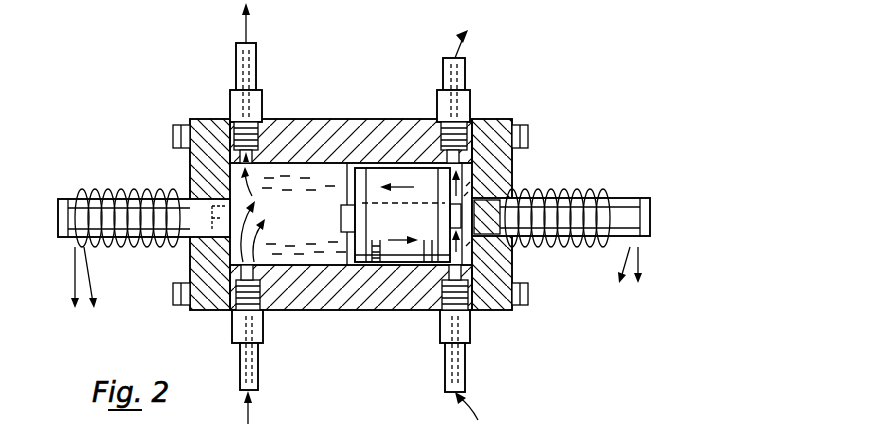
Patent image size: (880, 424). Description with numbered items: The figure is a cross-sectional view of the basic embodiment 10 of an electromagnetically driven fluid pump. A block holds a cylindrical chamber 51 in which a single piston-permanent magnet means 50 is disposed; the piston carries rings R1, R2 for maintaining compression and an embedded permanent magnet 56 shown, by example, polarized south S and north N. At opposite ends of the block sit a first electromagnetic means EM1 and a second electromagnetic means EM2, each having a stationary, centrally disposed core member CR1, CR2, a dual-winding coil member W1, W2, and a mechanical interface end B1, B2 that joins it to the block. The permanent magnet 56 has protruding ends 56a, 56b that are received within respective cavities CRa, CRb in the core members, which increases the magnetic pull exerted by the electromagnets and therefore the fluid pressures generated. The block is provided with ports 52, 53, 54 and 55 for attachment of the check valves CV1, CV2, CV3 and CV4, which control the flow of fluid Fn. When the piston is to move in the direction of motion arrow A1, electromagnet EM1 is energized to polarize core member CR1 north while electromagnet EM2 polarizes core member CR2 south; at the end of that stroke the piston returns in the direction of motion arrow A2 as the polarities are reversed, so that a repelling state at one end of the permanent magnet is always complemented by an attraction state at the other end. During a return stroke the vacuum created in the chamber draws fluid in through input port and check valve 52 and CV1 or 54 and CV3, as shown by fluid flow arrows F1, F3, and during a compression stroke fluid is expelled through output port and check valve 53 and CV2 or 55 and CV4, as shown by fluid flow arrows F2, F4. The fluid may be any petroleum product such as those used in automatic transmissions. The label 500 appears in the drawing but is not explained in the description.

The basic embodiment 10 is at (396, 177).
The piston-permanent magnet means 50 is at (360, 266).
The cylindrical chamber 51 is at (305, 160).
The port 52 is at (233, 308).
The port 53 is at (238, 117).
The port 54 is at (448, 346).
The port 55 is at (446, 118).
The embedded permanent magnet 56 is at (442, 257).
The protruding end 56a is at (316, 216).
The protruding end 56b is at (508, 260).
The mechanical interface end B1 is at (272, 168).
The mechanical interface end B2 is at (490, 200).
The check-valved fluid input port CV1 is at (256, 327).
The output port check valve CV2 is at (259, 103).
The check-valved fluid input port CV3 is at (484, 328).
The output port check valve CV4 is at (470, 105).
The core member CR1 is at (144, 250).
The core member CR2 is at (596, 170).
The cavity CRa is at (200, 262).
The cavity CRb is at (505, 160).
The first electromagnetic means EM1 is at (85, 180).
The second electromagnetic means EM2 is at (660, 186).
The dual-winding coil member W1 is at (96, 298).
The dual-winding coil member W2 is at (640, 262).
The input fluid flow F1 is at (251, 410).
The fluid output flow F2 is at (250, 28).
The input fluid flow F3 is at (478, 420).
The fluid output flow F4 is at (462, 37).
The ring R1 is at (362, 168).
The ring R2 is at (440, 160).
The motion arrow A1 is at (399, 179).
The motion arrow A2 is at (403, 249).
The south polarity S is at (371, 216).
The north polarity N is at (427, 216).
The fluid Fn is at (310, 231).
The system reference 500 is at (628, 423).